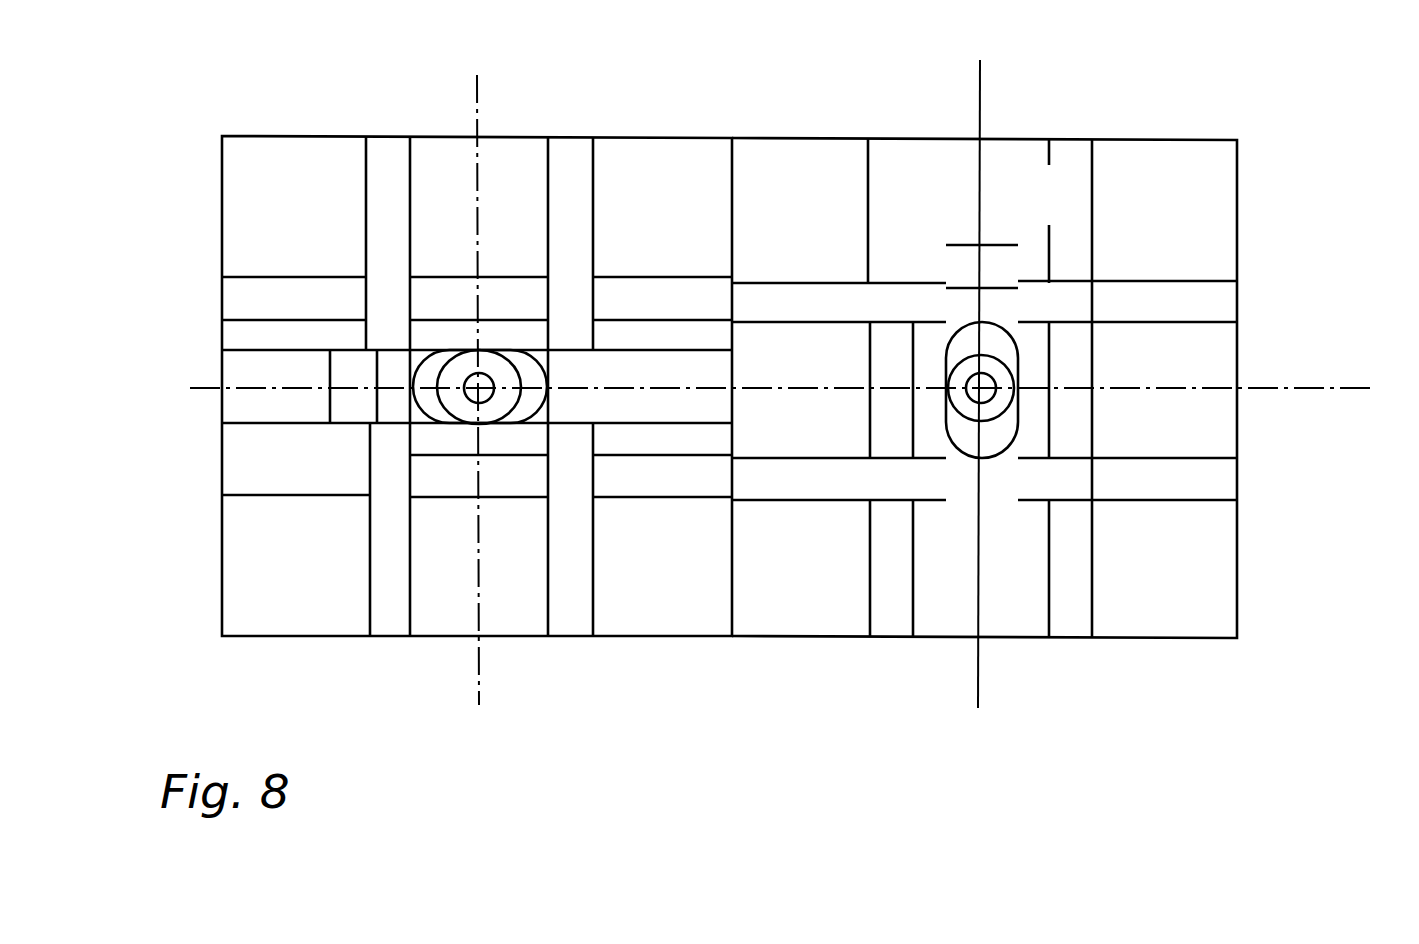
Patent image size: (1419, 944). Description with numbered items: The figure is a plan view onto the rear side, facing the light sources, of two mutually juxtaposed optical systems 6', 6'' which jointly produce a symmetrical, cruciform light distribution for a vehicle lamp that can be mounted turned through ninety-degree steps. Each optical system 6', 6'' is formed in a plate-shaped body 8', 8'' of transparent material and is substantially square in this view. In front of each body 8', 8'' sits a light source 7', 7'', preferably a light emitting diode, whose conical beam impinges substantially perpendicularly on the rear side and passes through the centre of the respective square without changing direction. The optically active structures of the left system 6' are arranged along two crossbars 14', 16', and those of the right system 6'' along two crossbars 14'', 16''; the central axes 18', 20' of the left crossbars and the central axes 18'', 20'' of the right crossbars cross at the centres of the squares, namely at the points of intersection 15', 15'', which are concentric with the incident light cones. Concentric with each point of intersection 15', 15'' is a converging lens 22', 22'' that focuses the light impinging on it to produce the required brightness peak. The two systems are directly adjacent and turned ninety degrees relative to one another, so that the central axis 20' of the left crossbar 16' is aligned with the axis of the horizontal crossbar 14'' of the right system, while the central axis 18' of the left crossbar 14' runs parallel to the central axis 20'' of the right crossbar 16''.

The optical system 6' is at (593, 60).
The optical system 6'' is at (1107, 60).
The light source 7' is at (493, 468).
The light source 7'' is at (1056, 373).
The plate-shaped body 8' is at (472, 425).
The plate-shaped body 8'' is at (984, 432).
The crossbar 14' is at (432, 719).
The horizontal crossbar 14'' is at (1333, 351).
The point of intersection 15' is at (511, 390).
The point of intersection 15'' is at (1001, 384).
The crossbar 16' is at (137, 429).
The crossbar 16'' is at (1047, 726).
The central axis 18' is at (503, 386).
The central axis 18'' is at (930, 388).
The central axis 20' is at (477, 387).
The central axis 20'' is at (984, 420).
The converging lens 22' is at (528, 389).
The converging lens 22'' is at (1034, 372).